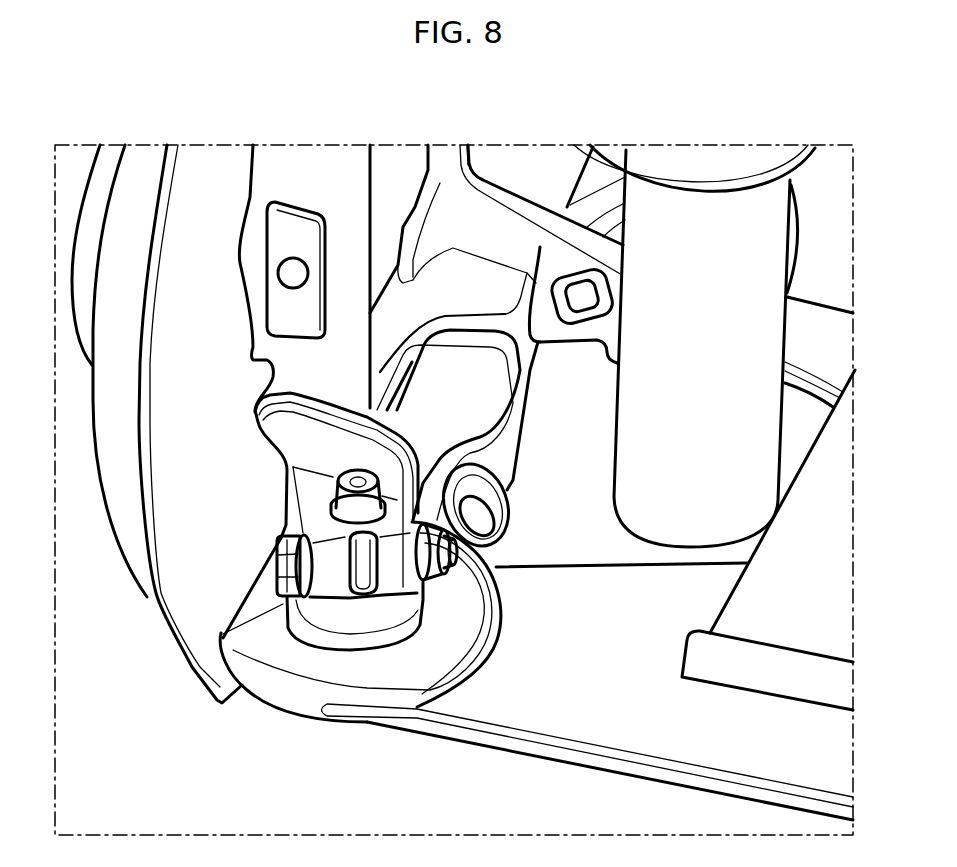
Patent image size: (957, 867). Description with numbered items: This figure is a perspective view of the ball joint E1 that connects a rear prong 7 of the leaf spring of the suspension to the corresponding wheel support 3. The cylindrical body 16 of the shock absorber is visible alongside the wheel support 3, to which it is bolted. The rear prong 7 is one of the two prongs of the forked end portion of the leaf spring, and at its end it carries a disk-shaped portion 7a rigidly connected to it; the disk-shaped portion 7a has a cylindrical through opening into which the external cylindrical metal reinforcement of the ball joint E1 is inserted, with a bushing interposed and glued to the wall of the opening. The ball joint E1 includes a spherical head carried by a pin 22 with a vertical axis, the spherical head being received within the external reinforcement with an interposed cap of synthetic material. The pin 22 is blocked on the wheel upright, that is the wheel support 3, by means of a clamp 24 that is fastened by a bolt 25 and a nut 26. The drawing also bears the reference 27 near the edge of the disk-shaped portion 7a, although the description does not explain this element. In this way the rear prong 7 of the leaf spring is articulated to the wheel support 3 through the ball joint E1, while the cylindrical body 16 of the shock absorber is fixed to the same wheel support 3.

The wheel support 3 is at (300, 165).
The cylindrical body 16 is at (777, 335).
The rear prong 7 is at (620, 722).
The disk-shaped portion 7a is at (310, 668).
The flange edge 27 is at (302, 702).
The bolt 25 is at (357, 573).
The ball joint E1 is at (292, 648).
The pin 22 is at (333, 477).
The clamp 24 is at (403, 580).
The nut 26 is at (470, 595).